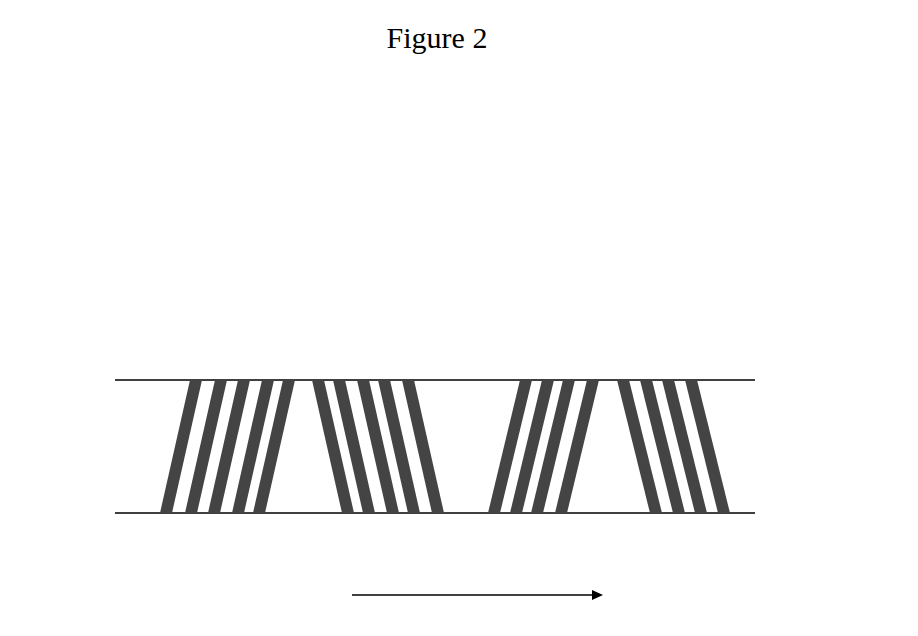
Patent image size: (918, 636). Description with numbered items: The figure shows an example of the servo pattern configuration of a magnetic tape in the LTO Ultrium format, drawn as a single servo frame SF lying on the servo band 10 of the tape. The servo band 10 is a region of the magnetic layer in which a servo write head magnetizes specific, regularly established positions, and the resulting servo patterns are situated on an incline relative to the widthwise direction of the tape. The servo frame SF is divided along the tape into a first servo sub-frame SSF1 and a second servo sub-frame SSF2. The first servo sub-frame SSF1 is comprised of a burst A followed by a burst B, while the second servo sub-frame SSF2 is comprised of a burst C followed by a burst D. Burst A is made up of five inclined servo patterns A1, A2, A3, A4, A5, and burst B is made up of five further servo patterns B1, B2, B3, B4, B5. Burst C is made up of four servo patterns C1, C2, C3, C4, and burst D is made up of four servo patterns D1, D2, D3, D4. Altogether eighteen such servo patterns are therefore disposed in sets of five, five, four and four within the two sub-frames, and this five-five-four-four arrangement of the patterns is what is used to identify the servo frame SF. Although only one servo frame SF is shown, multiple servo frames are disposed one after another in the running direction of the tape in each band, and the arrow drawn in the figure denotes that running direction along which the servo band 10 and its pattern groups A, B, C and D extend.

The servo band 10 is at (711, 561).
The servo frame SF is at (145, 210).
The servo sub-frame 1 SSF1 is at (172, 282).
The servo sub-frame 2 SSF2 is at (498, 282).
The burst A is at (192, 348).
The burst B is at (410, 348).
The burst C is at (608, 348).
The burst D is at (700, 348).
The servo pattern A1 is at (185, 438).
The servo pattern A2 is at (208, 438).
The servo pattern A3 is at (231, 438).
The servo pattern A4 is at (255, 438).
The servo pattern A5 is at (277, 438).
The servo pattern B1 is at (331, 438).
The servo pattern B2 is at (352, 438).
The servo pattern B3 is at (376, 438).
The servo pattern B4 is at (397, 438).
The servo pattern B5 is at (421, 438).
The servo pattern C1 is at (514, 438).
The servo pattern C2 is at (535, 438).
The servo pattern C3 is at (557, 438).
The servo pattern C4 is at (580, 438).
The servo pattern D1 is at (638, 438).
The servo pattern D2 is at (661, 438).
The servo pattern D3 is at (683, 438).
The servo pattern D4 is at (706, 438).